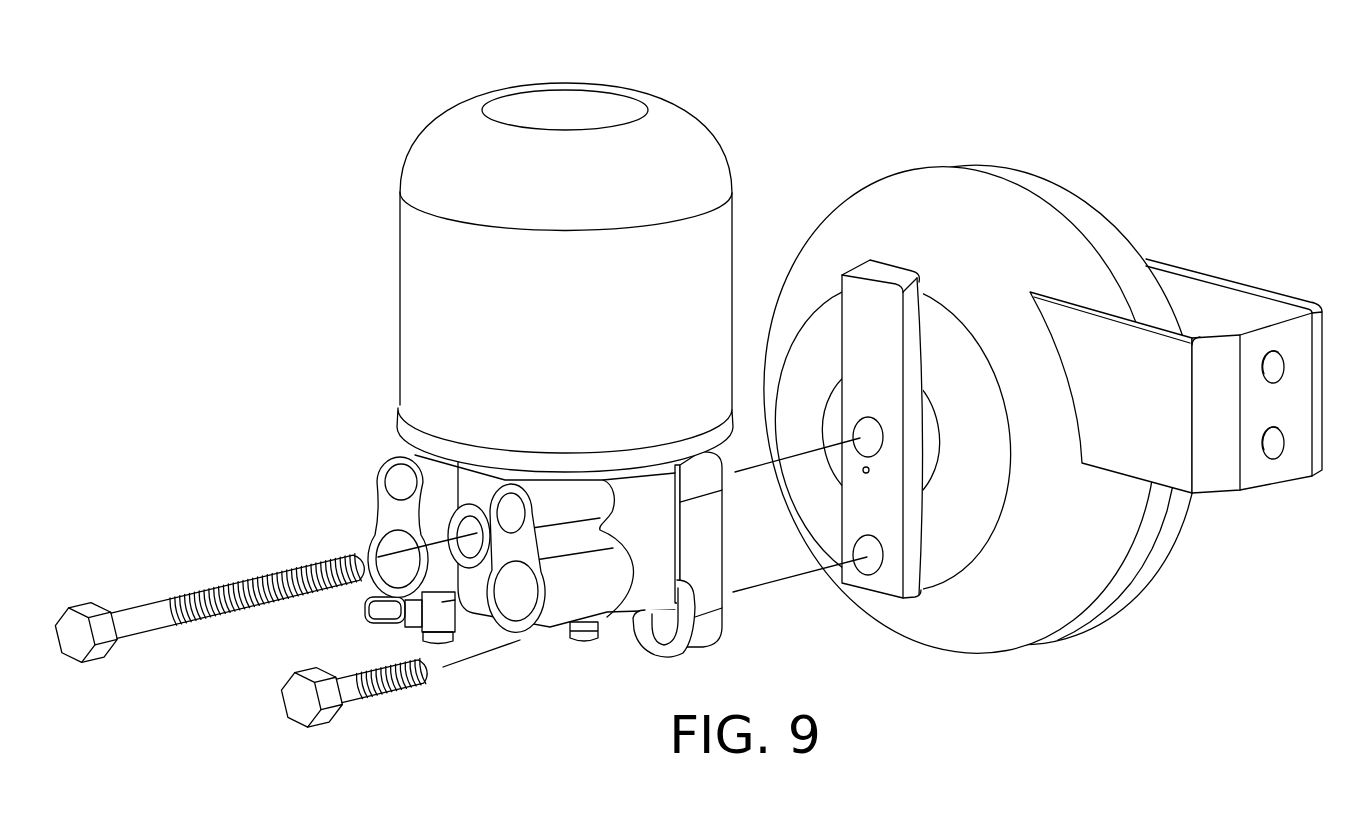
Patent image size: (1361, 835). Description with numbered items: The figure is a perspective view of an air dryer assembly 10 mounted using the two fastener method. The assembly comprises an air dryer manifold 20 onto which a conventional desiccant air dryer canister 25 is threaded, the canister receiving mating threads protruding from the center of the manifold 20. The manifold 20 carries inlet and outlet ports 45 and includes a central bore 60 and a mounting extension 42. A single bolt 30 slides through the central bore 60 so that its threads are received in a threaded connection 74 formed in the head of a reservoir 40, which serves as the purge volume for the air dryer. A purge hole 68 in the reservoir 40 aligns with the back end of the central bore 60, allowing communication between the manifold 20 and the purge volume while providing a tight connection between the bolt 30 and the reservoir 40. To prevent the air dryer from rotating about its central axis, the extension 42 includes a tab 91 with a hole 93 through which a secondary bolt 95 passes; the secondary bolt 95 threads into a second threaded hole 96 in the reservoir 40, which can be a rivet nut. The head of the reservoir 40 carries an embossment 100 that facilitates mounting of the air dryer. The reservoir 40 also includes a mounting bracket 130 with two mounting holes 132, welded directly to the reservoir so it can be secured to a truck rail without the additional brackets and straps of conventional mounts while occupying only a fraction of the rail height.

The air dryer assembly 10 is at (368, 258).
The air dryer manifold 20 is at (575, 603).
The air dryer canister 25 is at (418, 358).
The bolt 30 is at (125, 637).
The reservoir 40 is at (1113, 201).
The mounting extension 42 is at (698, 557).
The inlet and outlet ports 45 is at (520, 613).
The central bore 60 is at (467, 525).
The purge hole 68 is at (863, 470).
The threaded connection 74 is at (865, 425).
The tab 91 is at (708, 630).
The hole 93 is at (655, 622).
The secondary bolt 95 is at (343, 700).
The second threaded hole 96 is at (875, 555).
The embossment 100 is at (870, 583).
The mounting bracket 130 is at (1210, 477).
The mounting holes 132 is at (1277, 443).